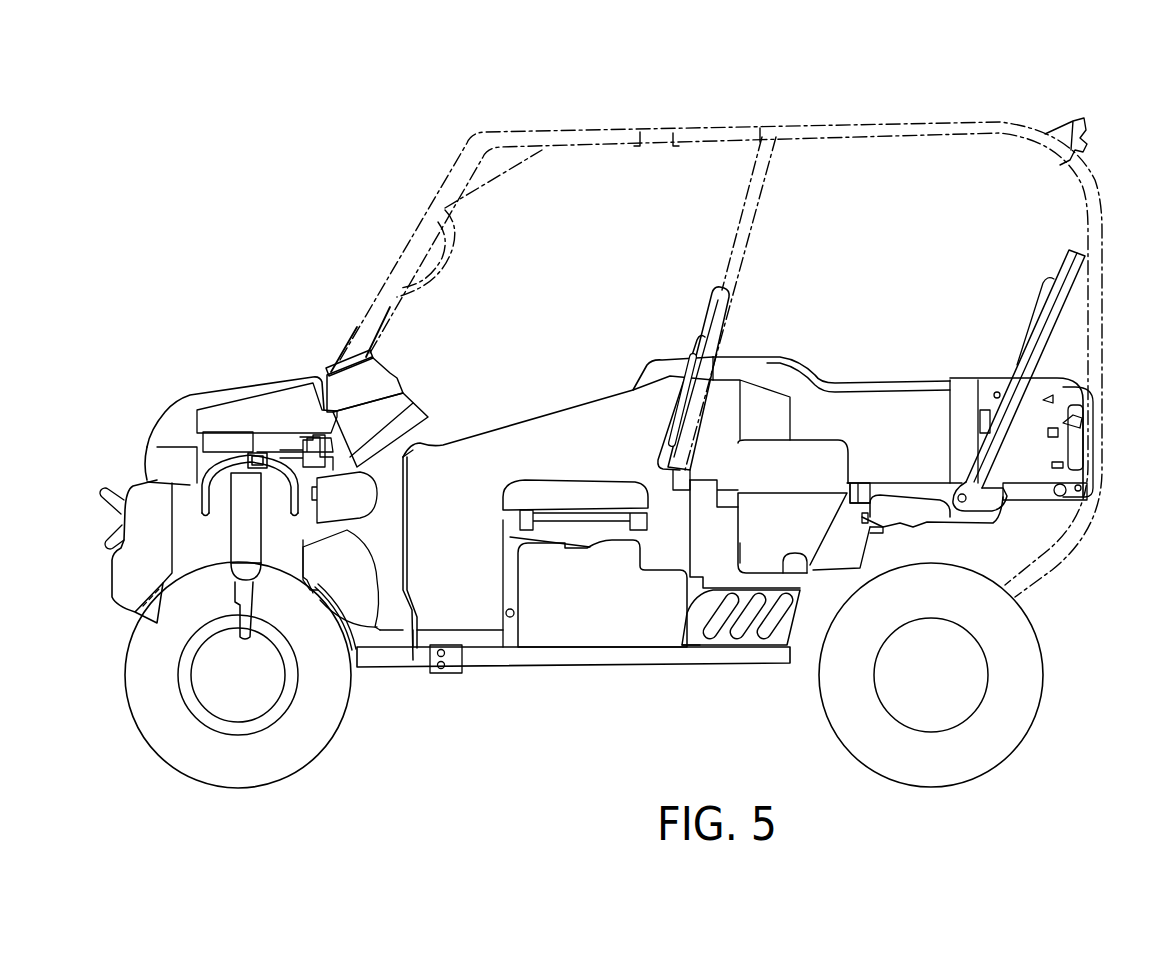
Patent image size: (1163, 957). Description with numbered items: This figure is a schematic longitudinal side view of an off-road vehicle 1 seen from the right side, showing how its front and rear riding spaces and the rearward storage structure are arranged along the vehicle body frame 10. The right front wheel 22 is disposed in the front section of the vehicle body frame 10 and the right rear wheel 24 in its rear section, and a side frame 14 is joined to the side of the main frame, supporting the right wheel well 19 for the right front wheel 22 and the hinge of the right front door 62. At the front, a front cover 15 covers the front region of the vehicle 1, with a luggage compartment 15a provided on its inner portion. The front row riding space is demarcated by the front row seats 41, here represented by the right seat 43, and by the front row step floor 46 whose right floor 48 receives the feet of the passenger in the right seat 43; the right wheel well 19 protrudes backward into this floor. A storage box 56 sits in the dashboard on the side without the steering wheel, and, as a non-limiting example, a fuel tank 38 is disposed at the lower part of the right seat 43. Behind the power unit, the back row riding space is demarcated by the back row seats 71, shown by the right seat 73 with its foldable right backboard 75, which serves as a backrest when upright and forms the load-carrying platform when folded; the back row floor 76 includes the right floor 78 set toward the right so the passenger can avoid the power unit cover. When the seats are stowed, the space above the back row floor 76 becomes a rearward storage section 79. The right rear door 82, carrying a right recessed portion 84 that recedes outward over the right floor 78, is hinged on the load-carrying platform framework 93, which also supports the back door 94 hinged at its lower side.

The off-road vehicle 1 is at (906, 93).
The vehicle body frame 10 is at (548, 693).
The side frame 14 is at (645, 653).
The front cover 15 is at (173, 463).
The luggage compartment 15a is at (258, 405).
The right wheel well 19 is at (377, 660).
The right front wheel 22 is at (258, 762).
The right rear wheel 24 is at (937, 773).
The fuel tank 38 is at (588, 623).
The front row seats 41 is at (624, 388).
The right seat 43 is at (552, 488).
The front row step floor 46 is at (457, 685).
The right floor 48 is at (470, 617).
The storage box 56 is at (327, 372).
The right front door 62 is at (470, 442).
The back row seats 71 is at (949, 409).
The right seat 73 is at (903, 503).
The right backboard 75 is at (1057, 270).
The back row floor 76 is at (753, 693).
The right floor 78 is at (813, 567).
The rearward storage section 79 is at (790, 524).
The right rear door 82 is at (877, 400).
The right recessed portion 84 is at (740, 543).
The load-carrying platform framework 93 is at (1063, 423).
The back door 94 is at (1087, 450).